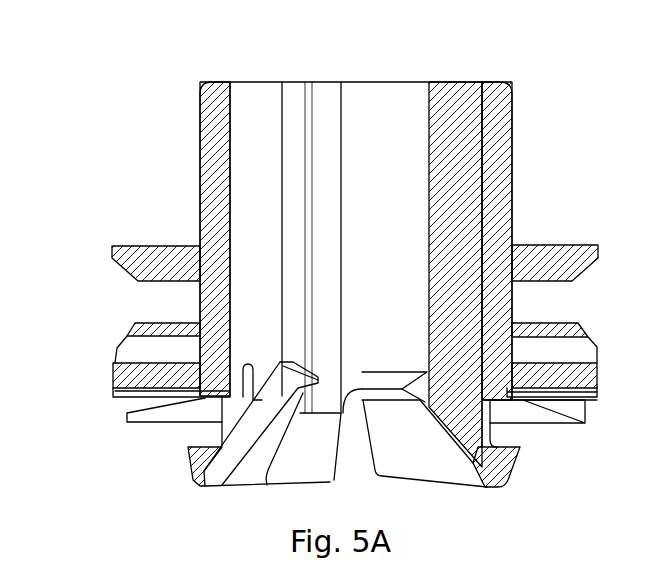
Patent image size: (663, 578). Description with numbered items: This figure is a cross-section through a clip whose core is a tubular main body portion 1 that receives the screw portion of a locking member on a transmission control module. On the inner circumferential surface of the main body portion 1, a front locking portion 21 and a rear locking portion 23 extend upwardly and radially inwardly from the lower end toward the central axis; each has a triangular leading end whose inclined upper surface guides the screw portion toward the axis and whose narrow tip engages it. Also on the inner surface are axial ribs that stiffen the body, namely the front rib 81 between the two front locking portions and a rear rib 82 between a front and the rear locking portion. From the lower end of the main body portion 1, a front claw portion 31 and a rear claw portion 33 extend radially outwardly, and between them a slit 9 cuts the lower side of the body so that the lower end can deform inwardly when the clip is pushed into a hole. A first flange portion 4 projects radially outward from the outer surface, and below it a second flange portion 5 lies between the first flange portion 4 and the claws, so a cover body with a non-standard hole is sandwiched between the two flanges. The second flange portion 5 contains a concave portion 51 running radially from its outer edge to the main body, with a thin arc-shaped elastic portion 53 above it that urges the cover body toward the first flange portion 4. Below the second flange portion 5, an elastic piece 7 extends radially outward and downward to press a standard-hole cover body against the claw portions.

The main body portion 1 is at (212, 100).
The first flange portion 4 is at (142, 250).
The second flange portion 5 is at (103, 378).
The elastic piece 7 is at (127, 418).
The slit 9 is at (358, 444).
The front locking portion 21 is at (400, 372).
The rear locking portion 23 is at (284, 364).
The front claw portion 31 is at (518, 471).
The rear claw portion 33 is at (198, 471).
The concave portion 51 is at (170, 360).
The elastic portion 53 is at (130, 333).
The front rib 81 is at (453, 88).
The rear rib 82 is at (328, 88).